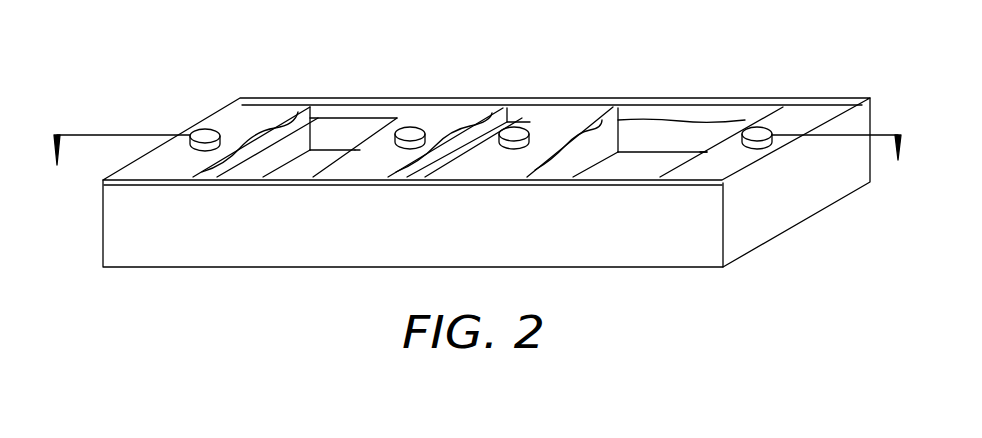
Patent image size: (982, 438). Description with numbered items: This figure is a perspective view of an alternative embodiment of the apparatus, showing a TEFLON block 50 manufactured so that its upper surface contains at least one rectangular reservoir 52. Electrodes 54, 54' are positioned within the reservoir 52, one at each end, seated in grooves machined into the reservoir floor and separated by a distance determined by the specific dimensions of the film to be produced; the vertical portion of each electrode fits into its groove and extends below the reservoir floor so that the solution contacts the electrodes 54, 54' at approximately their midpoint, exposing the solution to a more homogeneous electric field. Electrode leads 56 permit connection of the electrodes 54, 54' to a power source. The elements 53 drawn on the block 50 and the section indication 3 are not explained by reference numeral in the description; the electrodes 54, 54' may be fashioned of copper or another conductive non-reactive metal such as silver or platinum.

The block 50 is at (100, 222).
The rectangular reservoir 52 is at (334, 130).
The rib 53 is at (648, 102).
The electrode 54 is at (608, 90).
The electrode 54' is at (384, 72).
The electrode lead 56 is at (203, 128).
The section line 3- 3 is at (475, 169).